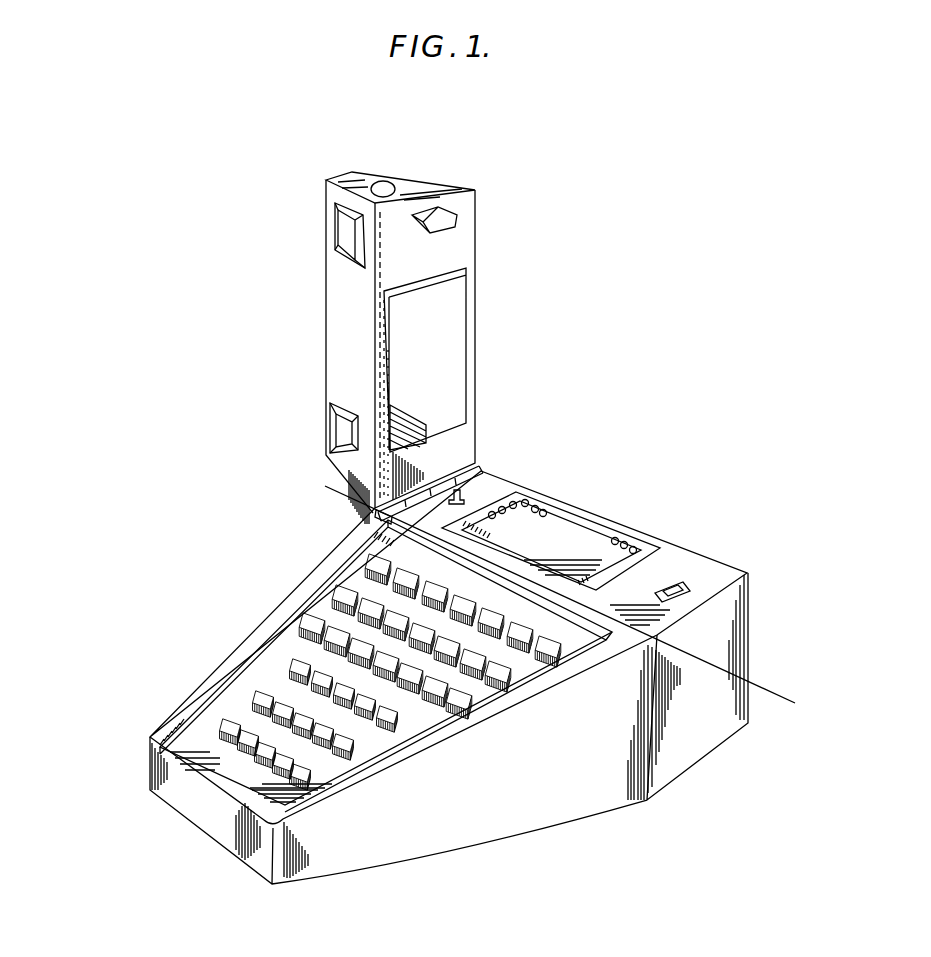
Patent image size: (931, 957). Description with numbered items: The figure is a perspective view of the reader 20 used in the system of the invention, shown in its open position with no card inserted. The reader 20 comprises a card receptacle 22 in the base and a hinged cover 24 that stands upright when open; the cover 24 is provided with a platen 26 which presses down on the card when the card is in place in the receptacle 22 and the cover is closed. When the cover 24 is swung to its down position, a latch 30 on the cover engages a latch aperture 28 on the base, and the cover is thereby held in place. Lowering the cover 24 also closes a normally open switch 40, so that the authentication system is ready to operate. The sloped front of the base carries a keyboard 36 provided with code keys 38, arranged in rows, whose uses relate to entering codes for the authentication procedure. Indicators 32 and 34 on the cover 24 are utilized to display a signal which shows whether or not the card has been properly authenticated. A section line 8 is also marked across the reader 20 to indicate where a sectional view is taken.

The section line 8- 8 is at (325, 487).
The reader 20 is at (695, 740).
The card receptacle 22 is at (545, 513).
The hinged cover 24 is at (342, 343).
The platen 26 is at (452, 348).
The latch aperture 28 is at (685, 586).
The latch 30 is at (440, 212).
The indicator 32 is at (340, 230).
The indicator 34 is at (350, 444).
The keyboard 36 is at (413, 730).
The code keys 38 is at (220, 729).
The normally open switch 40 is at (483, 475).